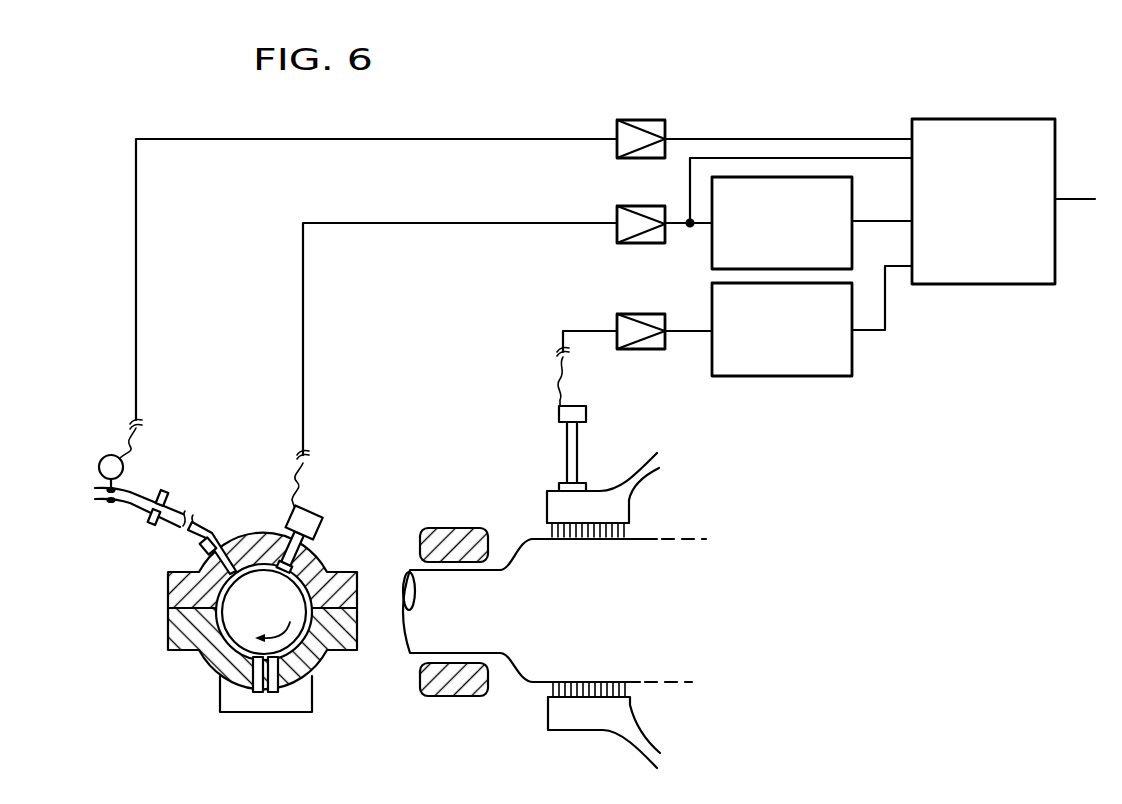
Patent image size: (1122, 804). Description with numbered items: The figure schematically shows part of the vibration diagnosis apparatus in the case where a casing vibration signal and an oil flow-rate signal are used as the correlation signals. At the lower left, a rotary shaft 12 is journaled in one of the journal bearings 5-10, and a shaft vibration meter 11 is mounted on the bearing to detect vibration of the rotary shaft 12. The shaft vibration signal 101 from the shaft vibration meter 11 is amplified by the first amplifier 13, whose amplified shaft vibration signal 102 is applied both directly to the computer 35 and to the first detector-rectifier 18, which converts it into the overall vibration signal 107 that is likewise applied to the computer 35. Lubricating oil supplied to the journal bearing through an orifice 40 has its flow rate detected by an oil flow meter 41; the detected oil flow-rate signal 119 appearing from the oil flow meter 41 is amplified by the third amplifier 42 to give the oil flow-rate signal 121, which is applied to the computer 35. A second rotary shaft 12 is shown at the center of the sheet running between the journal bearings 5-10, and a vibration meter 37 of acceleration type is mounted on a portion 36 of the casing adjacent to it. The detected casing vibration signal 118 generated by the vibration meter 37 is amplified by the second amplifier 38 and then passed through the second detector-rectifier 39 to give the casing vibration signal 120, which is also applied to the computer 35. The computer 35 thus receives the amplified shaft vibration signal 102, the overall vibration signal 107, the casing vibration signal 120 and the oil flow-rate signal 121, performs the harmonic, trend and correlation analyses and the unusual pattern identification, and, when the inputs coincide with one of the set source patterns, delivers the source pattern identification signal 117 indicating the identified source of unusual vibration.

The journal bearings 5-10 is at (345, 572).
The shaft vibration meter 11 is at (316, 509).
The rotary shaft 12 is at (240, 633).
The first amplifier 13 is at (630, 206).
The first detector-rectifier 18 is at (712, 262).
The computer 35 is at (969, 119).
The portion of the casing 36 is at (547, 508).
The vibration meter of acceleration type 37 is at (559, 418).
The second amplifier 38 is at (647, 351).
The second detector-rectifier 39 is at (790, 376).
The orifice 40 is at (166, 500).
The oil flow meter 41 is at (101, 467).
The third amplifier 42 is at (625, 120).
The shaft vibration signal 101 is at (504, 217).
The amplified shaft vibration signal 102 is at (882, 158).
The overall vibration signal 107 is at (884, 221).
The source pattern identification signal 117 is at (1082, 199).
The detected casing vibration signal 118 is at (595, 330).
The detected oil flow-rate signal 119 is at (504, 139).
The casing vibration signal 120 is at (880, 330).
The oil flow-rate signal 121 is at (816, 138).